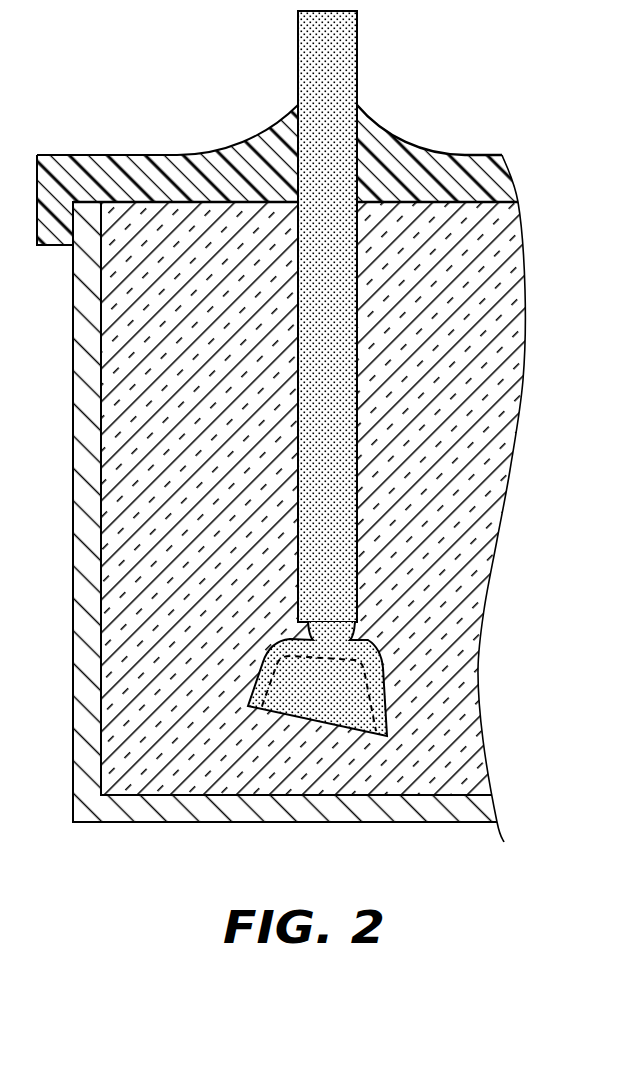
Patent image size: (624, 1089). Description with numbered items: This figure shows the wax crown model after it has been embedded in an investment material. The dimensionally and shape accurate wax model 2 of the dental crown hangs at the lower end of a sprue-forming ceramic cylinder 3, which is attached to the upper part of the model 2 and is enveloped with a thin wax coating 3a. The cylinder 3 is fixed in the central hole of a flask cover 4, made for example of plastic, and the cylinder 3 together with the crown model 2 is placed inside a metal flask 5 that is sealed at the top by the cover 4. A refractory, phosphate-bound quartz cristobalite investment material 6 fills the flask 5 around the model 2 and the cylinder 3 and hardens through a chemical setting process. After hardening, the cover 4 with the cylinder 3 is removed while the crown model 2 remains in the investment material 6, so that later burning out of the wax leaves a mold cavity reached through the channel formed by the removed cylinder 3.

The model 2 is at (347, 715).
The ceramic cylinder 3 is at (348, 43).
The wax coating 3a is at (298, 46).
The flask cover 4 is at (131, 165).
The metal flask 5 is at (89, 410).
The investment material 6 is at (185, 770).